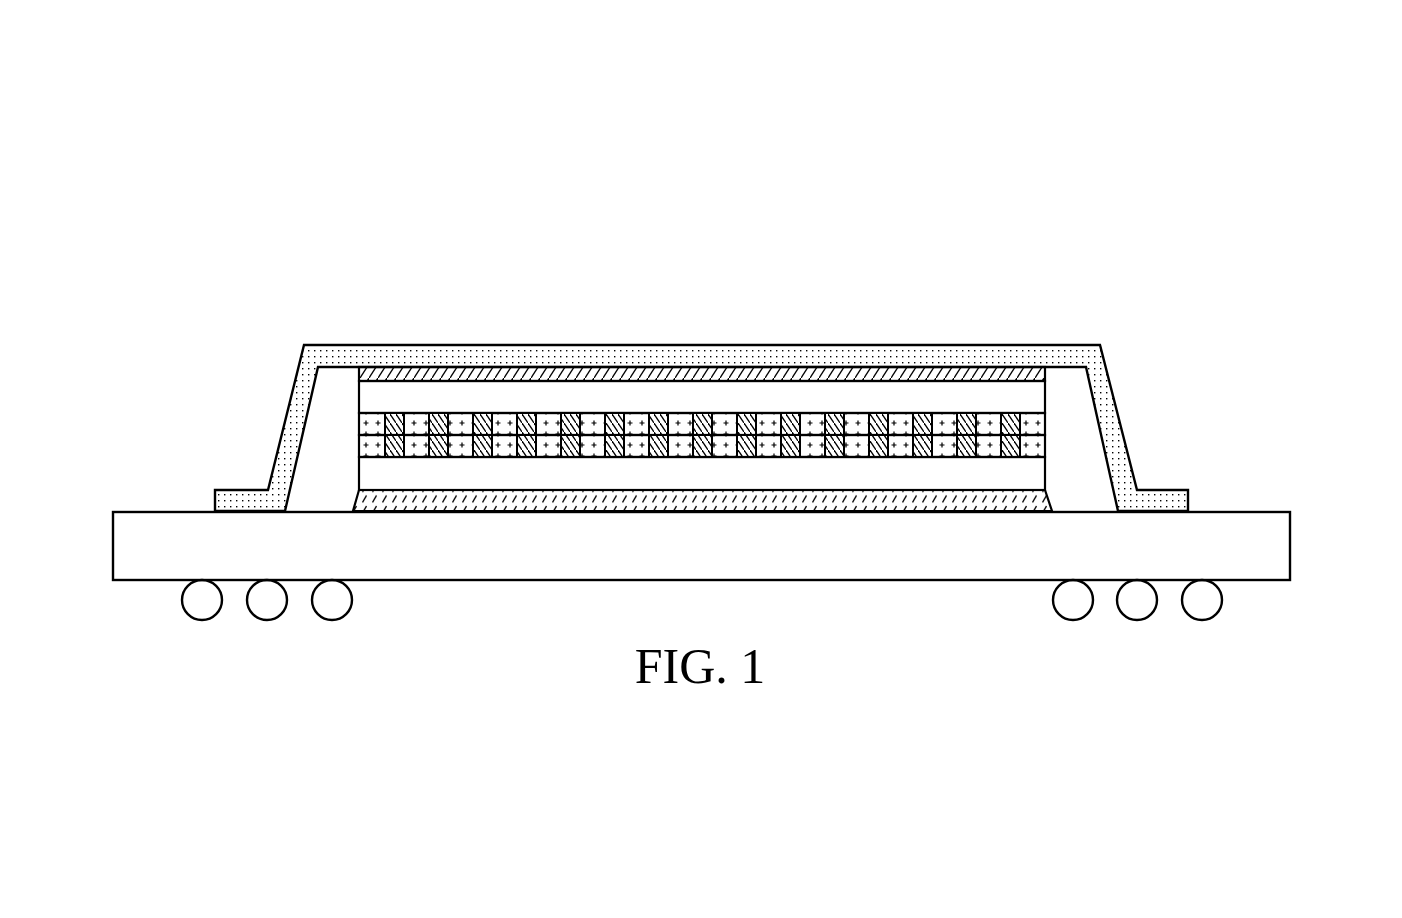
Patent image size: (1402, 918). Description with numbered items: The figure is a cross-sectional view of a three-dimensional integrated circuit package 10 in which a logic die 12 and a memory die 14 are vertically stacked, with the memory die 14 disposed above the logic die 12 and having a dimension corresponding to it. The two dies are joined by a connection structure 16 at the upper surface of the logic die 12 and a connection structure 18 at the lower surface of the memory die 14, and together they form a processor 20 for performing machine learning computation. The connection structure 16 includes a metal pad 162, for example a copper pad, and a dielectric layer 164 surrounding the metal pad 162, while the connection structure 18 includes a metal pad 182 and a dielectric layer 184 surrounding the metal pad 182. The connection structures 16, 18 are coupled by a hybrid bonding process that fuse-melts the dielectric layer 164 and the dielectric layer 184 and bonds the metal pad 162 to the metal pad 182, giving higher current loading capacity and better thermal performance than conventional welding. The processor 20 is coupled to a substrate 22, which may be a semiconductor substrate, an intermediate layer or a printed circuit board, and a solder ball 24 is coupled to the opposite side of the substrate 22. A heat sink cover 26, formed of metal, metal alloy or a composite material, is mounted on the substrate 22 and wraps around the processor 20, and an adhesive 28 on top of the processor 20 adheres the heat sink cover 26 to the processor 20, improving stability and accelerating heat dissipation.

The three-dimensional integrated circuit package 10 is at (113, 265).
The logic die 12 is at (370, 474).
The memory die 14 is at (370, 399).
The connection structure 16 is at (626, 524).
The connection structure 18 is at (626, 356).
The processor 20 is at (205, 355).
The substrate 22 is at (1278, 545).
The solder ball 24 is at (1210, 600).
The heat sink cover 26 is at (706, 359).
The adhesive 28 is at (617, 374).
The metal pad 162 is at (527, 450).
The dielectric layer 164 is at (462, 450).
The metal pad 182 is at (527, 425).
The dielectric layer 184 is at (462, 425).